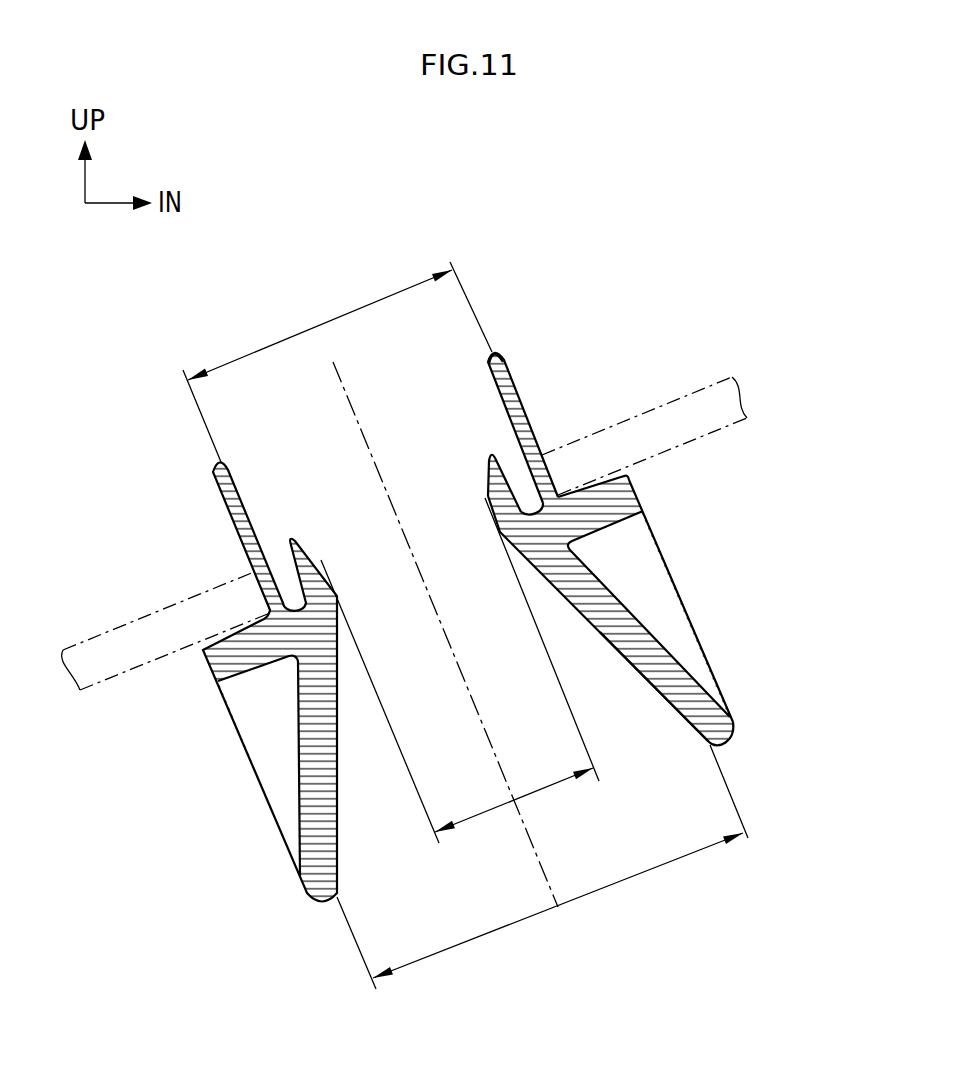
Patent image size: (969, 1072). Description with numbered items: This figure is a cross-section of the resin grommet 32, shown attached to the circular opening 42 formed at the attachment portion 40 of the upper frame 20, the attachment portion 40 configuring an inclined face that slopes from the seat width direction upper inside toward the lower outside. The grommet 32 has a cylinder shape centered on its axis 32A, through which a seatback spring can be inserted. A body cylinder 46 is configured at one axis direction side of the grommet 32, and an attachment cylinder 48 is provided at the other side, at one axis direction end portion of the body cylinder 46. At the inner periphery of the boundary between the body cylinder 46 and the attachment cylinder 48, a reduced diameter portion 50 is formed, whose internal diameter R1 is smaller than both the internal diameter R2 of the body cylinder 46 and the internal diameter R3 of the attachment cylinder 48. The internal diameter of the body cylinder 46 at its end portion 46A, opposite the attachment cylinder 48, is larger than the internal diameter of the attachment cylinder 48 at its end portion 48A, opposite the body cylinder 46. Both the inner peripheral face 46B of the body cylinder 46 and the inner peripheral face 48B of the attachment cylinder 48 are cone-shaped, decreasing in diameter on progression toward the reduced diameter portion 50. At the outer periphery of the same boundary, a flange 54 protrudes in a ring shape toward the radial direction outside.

The upper frame 20 is at (404, 482).
The attachment portion 40 is at (404, 482).
The circular opening 42 is at (537, 473).
The grommet 32 is at (523, 574).
The axis 32A is at (345, 384).
The body cylinder 46 is at (665, 640).
The end portion 46A is at (725, 745).
The inner peripheral face 46B is at (653, 690).
The attachment cylinder 48 is at (533, 372).
The end portion 48A is at (487, 480).
The inner peripheral face 48B is at (512, 368).
The reduced diameter portion 50 is at (492, 520).
The flange 54 is at (631, 478).
The internal diameter of reduced diameter portion R1 is at (502, 807).
The internal diameter of body cylinder R2 is at (537, 920).
The internal diameter of attachment cylinder R3 is at (325, 323).